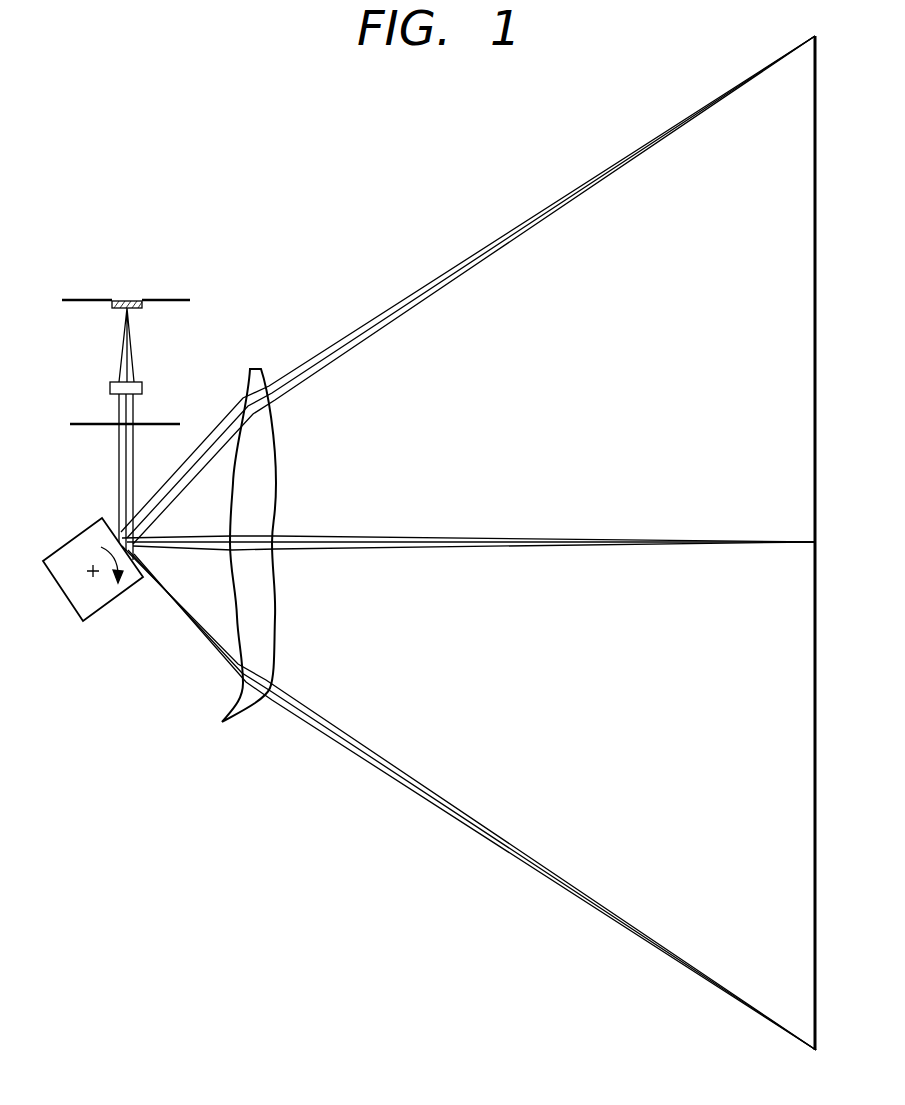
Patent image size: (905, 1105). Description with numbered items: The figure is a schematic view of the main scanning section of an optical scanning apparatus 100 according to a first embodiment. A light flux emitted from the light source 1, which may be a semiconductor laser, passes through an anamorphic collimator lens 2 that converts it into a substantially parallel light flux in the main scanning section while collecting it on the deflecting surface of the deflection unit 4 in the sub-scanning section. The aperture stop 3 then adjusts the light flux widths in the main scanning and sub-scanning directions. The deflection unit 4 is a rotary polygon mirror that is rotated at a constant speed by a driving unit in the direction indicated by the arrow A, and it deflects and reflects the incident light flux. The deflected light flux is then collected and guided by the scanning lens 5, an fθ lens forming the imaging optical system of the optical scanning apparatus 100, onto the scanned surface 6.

The optical scanning apparatus 100 is at (234, 285).
The light source 1 is at (166, 298).
The anamorphic collimator lens 2 is at (110, 388).
The aperture stop 3 is at (80, 423).
The deflection unit 4 is at (72, 538).
The scanning lens 5 is at (222, 718).
The scanned surface 6 is at (815, 868).